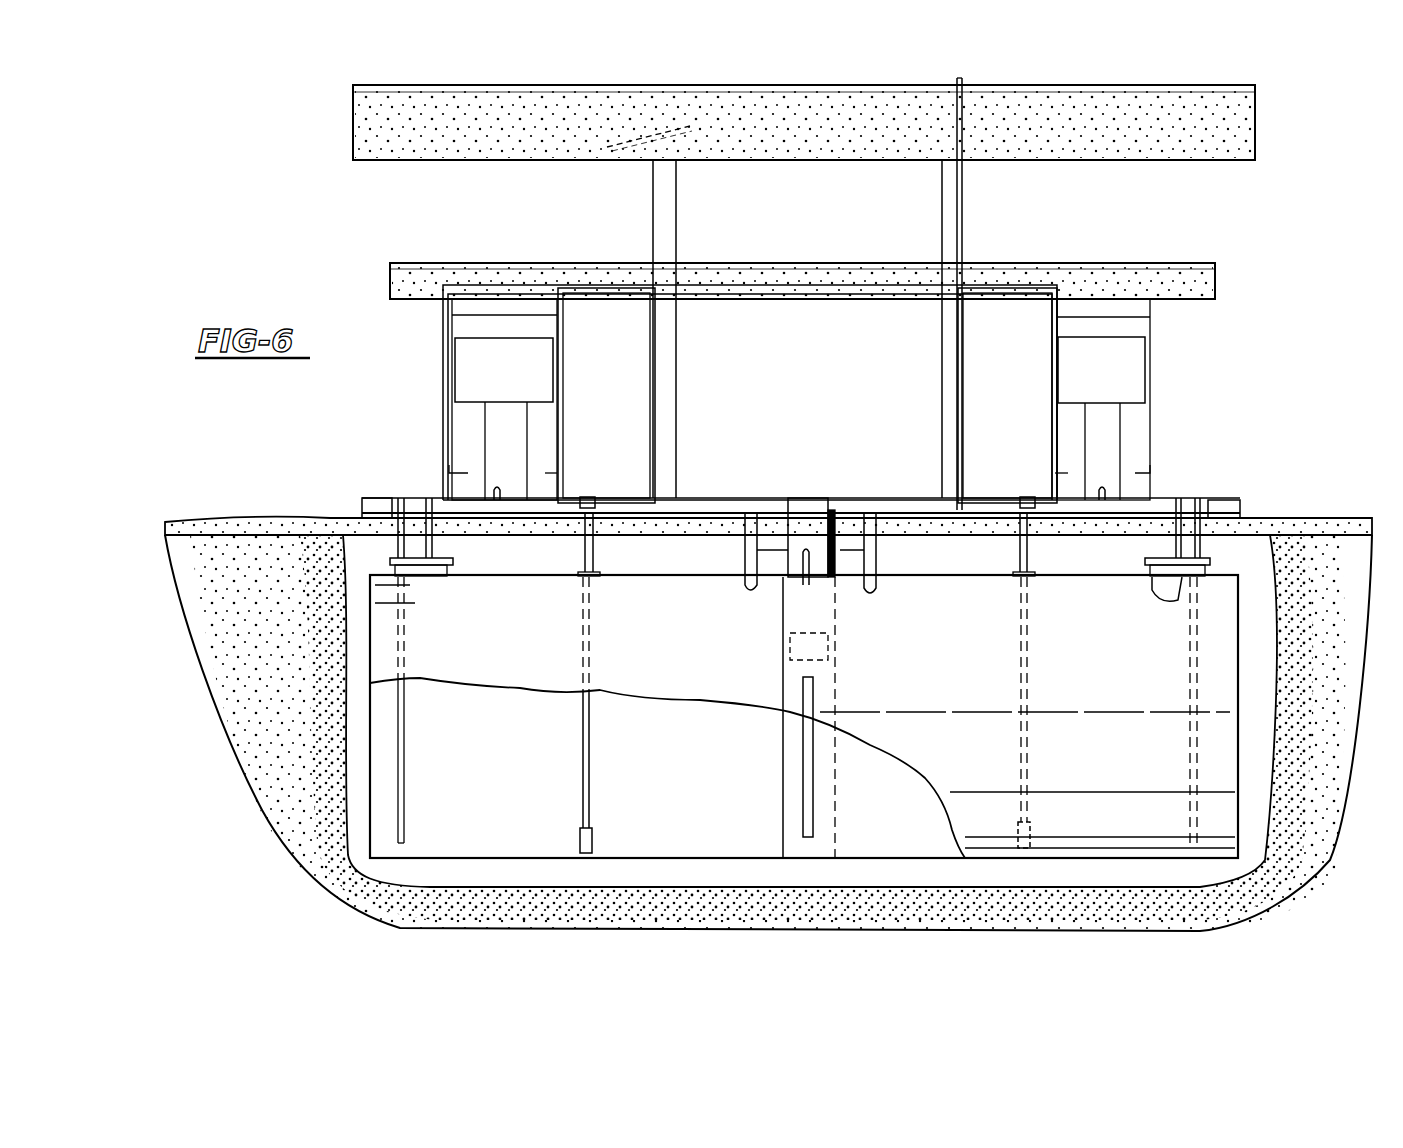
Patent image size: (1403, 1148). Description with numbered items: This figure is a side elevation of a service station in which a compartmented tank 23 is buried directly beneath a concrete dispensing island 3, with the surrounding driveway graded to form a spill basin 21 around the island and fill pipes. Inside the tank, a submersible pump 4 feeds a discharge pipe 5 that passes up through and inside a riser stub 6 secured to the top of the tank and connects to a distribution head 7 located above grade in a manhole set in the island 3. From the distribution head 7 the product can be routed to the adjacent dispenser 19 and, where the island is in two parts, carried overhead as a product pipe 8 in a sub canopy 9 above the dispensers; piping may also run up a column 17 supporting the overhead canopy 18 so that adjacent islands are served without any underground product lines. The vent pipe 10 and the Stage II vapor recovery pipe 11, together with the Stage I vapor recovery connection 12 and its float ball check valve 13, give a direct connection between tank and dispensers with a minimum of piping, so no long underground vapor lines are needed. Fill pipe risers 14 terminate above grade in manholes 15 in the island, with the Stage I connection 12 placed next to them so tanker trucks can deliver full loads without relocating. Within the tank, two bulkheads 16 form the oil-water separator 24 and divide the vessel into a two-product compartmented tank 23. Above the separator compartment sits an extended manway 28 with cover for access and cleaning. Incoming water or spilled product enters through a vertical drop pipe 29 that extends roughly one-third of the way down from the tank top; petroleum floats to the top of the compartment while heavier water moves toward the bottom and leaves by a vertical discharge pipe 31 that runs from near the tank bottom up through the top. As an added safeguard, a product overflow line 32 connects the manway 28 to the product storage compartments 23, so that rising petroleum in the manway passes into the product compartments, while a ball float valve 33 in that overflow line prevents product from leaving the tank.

The dispensing island 3 is at (365, 498).
The submersible pump 4 is at (592, 840).
The discharge pipe 5 is at (590, 745).
The riser stub 6 is at (594, 545).
The distribution head 7 is at (592, 497).
The overhead product pipe 8 is at (620, 300).
The sub canopy 9 is at (426, 296).
The vent pipe 10 is at (965, 233).
The vapor recovery pipe (Stage II) 11 is at (497, 487).
The Stage I vapor recovery connection 12 is at (428, 498).
The float ball check valve 13 is at (1175, 598).
The fill pipe riser 14 is at (400, 498).
The manhole 15 is at (1238, 508).
The bulkhead 16 is at (652, 400).
The column 17 is at (678, 323).
The canopy 18 is at (408, 150).
The dispenser 19 is at (518, 386).
The spill basin 21 is at (262, 520).
The compartmented tank 23 is at (510, 619).
The oil-water separator 24 is at (783, 752).
The extended manway 28 is at (820, 538).
The vertical drop pipe 29 is at (798, 580).
The vertical discharge pipe 31 is at (803, 800).
The product overflow line 32 is at (838, 580).
The ball float valve 33 is at (876, 588).